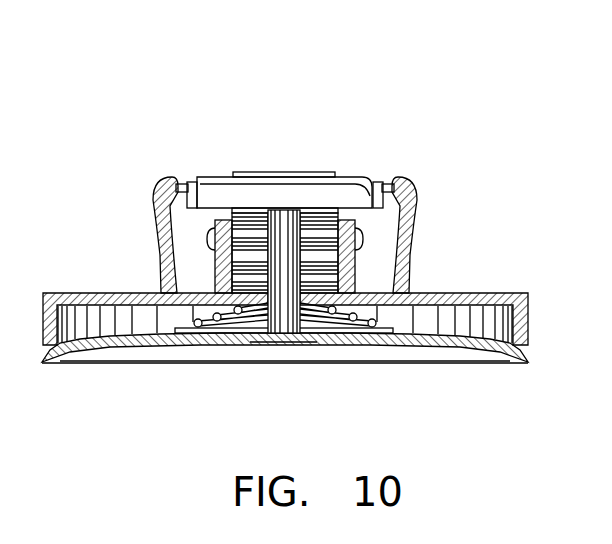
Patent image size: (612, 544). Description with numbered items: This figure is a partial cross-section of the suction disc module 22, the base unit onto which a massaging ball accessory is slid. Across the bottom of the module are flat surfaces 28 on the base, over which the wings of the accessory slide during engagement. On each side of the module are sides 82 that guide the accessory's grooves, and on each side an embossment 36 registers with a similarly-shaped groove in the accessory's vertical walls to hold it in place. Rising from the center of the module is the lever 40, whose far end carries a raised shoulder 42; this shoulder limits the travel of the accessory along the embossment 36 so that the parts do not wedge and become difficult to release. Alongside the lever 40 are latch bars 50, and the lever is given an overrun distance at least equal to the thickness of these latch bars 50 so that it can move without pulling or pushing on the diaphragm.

The suction disc module 22 is at (478, 160).
The flat surfaces 28 is at (73, 291).
The embossment 36 is at (155, 186).
The lever 40 is at (322, 192).
The raised shoulder 42 is at (268, 171).
The latch bars 50 is at (378, 178).
The sides 82 is at (163, 257).